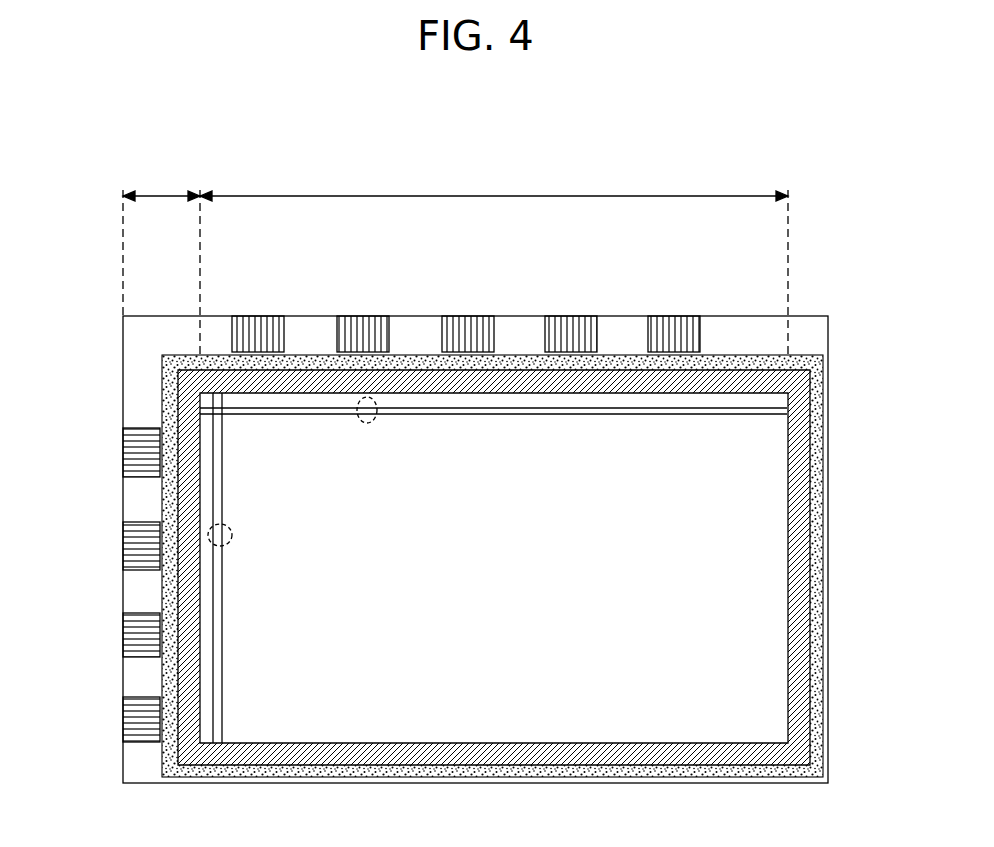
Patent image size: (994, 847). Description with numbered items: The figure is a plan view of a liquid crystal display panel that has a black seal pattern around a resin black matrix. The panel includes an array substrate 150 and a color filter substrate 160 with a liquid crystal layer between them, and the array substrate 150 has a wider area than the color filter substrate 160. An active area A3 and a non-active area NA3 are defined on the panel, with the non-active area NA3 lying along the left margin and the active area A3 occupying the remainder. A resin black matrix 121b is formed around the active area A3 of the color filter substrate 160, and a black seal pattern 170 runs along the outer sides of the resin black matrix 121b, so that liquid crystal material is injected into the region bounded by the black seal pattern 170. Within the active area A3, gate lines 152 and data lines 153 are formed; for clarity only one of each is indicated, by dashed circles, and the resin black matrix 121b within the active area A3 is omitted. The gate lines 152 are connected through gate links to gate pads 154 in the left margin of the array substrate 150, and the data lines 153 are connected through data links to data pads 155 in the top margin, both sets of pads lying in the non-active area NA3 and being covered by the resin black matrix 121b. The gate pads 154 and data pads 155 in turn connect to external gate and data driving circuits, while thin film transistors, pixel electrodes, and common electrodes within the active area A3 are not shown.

The array substrate 150 is at (815, 335).
The color filter substrate 160 is at (513, 353).
The black seal pattern 170 is at (407, 362).
The resin black matrix 121b is at (745, 370).
The gate line 152 is at (368, 423).
The data line 153 is at (223, 548).
The data pad 155 is at (255, 316).
The gate pad 154 is at (123, 455).
The non-active area NA3 is at (161, 263).
The active area A3 is at (494, 263).